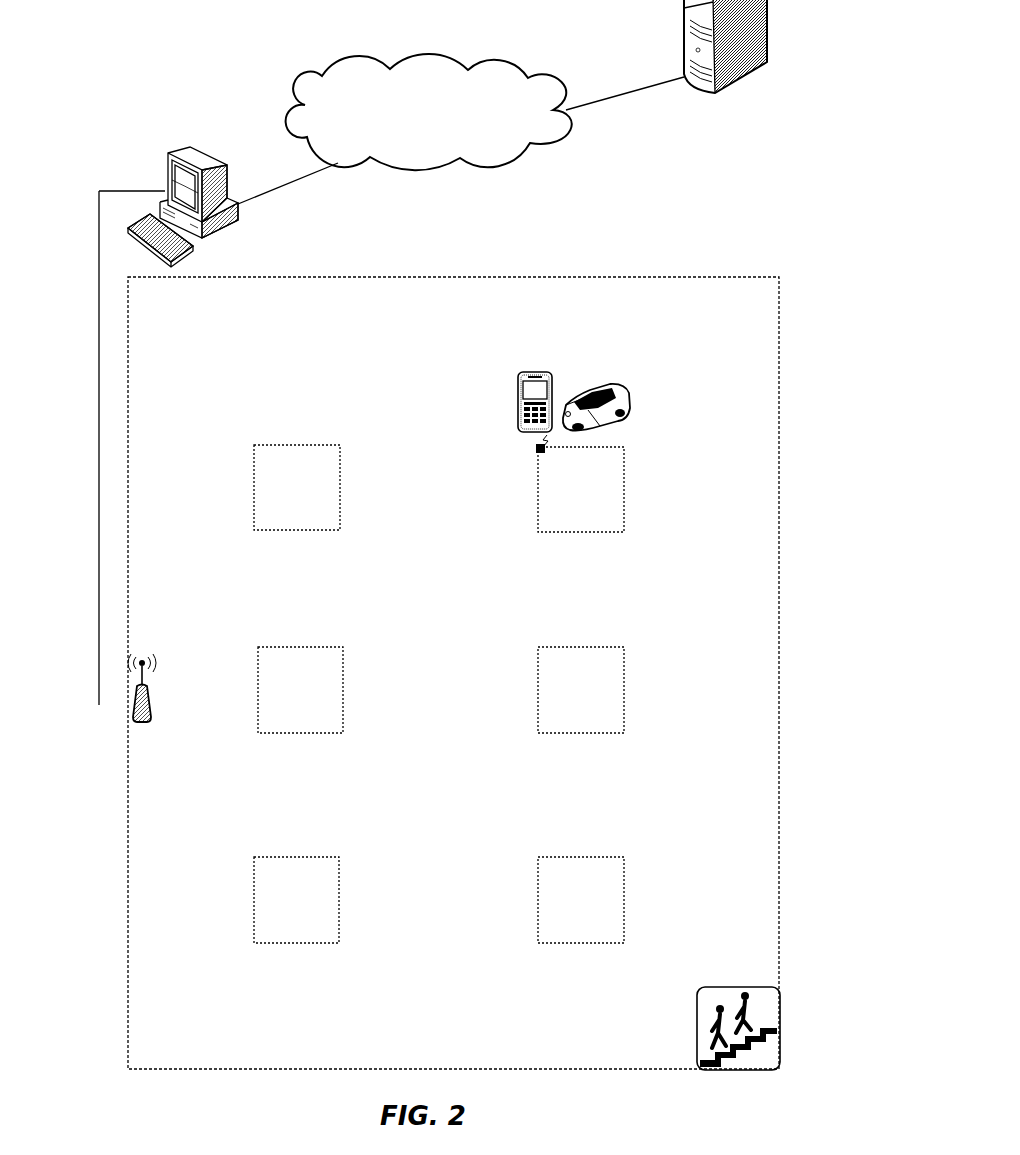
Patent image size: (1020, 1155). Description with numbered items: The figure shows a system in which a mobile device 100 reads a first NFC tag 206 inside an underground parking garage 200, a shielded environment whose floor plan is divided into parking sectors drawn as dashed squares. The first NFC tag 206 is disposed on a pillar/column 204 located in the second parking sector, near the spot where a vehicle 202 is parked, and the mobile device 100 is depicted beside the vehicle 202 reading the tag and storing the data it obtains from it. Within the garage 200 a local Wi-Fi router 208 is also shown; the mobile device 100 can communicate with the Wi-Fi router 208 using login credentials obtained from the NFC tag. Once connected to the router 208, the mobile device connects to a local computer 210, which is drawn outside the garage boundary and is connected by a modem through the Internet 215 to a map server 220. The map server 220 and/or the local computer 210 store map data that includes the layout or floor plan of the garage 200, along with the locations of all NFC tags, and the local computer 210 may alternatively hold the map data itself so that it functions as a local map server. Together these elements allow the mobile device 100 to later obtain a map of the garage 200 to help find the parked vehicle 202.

The mobile device 100 is at (531, 371).
The underground parking garage 200 is at (555, 313).
The vehicle 202 is at (600, 384).
The pillar/column 204 is at (625, 488).
The first NFC tag 206 is at (536, 447).
The Wi-Fi router 208 is at (142, 722).
The local computer 210 is at (193, 150).
The Internet 215 is at (441, 132).
The map server 220 is at (742, 96).